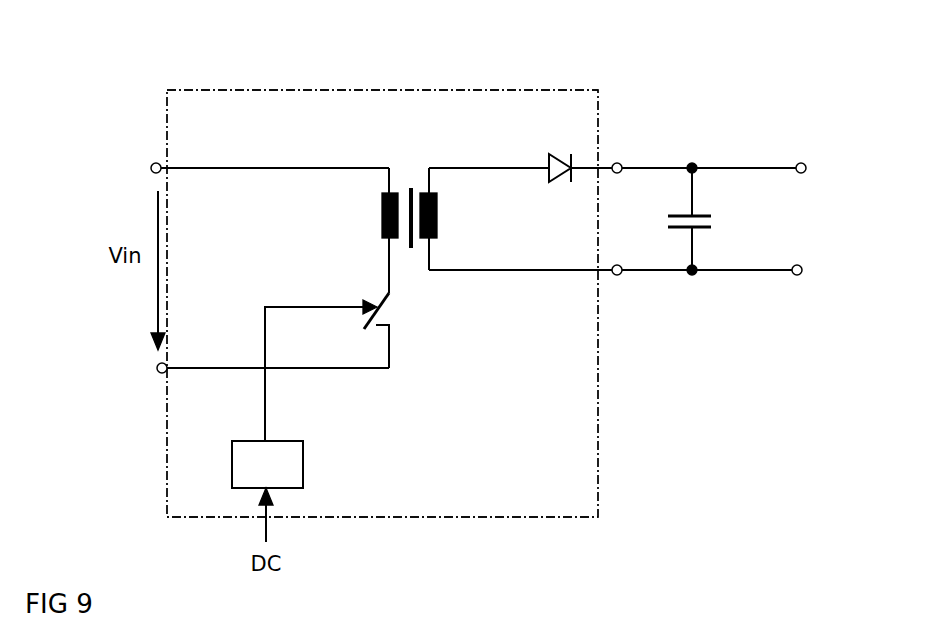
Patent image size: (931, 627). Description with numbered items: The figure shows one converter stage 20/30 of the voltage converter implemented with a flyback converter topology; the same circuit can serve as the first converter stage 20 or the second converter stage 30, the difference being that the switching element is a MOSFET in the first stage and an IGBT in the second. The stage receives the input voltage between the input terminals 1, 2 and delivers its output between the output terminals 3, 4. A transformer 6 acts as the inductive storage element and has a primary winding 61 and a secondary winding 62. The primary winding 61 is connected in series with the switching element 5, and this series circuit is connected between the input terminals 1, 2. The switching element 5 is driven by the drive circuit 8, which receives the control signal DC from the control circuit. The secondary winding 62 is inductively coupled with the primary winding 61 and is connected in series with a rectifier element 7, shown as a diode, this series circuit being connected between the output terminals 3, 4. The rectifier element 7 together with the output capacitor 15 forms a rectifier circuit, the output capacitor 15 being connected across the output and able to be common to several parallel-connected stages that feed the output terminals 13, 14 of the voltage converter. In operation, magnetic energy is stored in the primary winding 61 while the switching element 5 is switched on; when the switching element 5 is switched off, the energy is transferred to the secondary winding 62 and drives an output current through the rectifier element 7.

The input terminal 1 is at (153, 163).
The input terminal 2 is at (158, 374).
The output terminal 3 is at (613, 163).
The output terminal 4 is at (613, 276).
The switching element 5 is at (388, 310).
The transformer 6 is at (411, 173).
The rectifier element 7 is at (560, 150).
The drive circuit 8 is at (231, 463).
The output terminal 13 is at (805, 163).
The output terminal 14 is at (796, 277).
The output capacitor 15 is at (717, 222).
The first converter stage 20 is at (416, 92).
The second converter stage 30 is at (382, 303).
The primary winding 61 is at (382, 217).
The secondary winding 62 is at (438, 213).